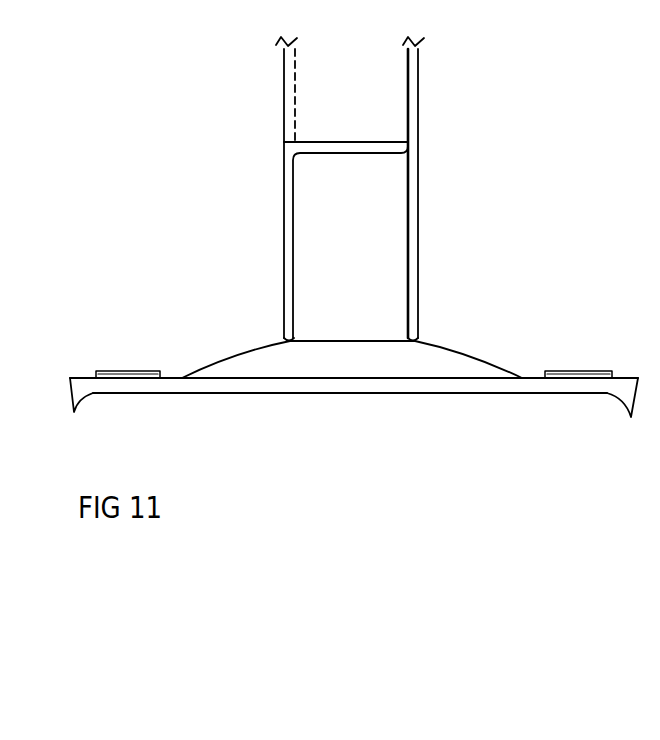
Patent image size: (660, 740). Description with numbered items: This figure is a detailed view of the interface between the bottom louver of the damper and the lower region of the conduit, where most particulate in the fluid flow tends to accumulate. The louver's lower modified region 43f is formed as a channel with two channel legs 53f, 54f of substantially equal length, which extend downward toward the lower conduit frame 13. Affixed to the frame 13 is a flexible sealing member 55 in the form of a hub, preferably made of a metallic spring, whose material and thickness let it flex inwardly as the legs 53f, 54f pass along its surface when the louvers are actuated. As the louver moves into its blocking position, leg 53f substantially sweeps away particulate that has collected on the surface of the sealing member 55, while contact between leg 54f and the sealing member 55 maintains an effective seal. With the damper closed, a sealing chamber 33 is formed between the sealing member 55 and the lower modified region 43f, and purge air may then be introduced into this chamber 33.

The lower modified region 43f is at (246, 172).
The channel leg 53f is at (283, 270).
The channel leg 54f is at (419, 237).
The sealing chamber 33 is at (358, 244).
The flexible sealing member 55 is at (363, 341).
The lower conduit frame 13 is at (183, 393).